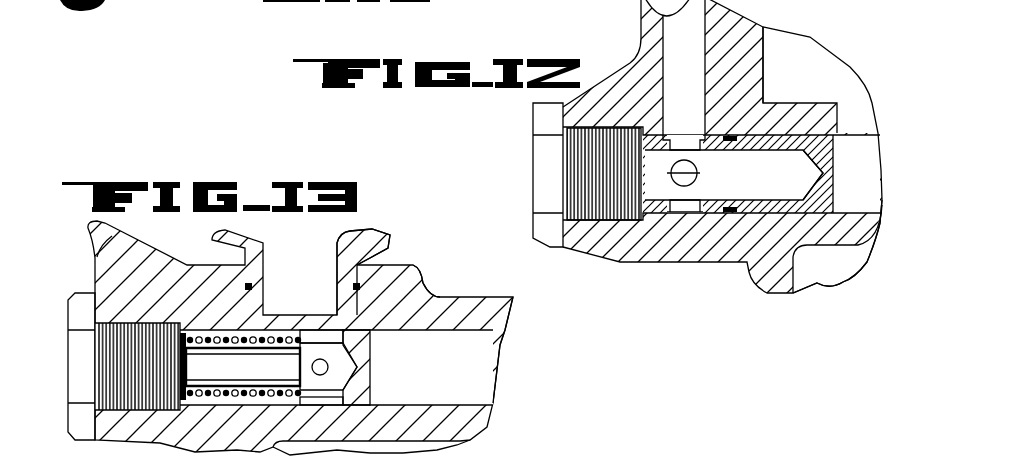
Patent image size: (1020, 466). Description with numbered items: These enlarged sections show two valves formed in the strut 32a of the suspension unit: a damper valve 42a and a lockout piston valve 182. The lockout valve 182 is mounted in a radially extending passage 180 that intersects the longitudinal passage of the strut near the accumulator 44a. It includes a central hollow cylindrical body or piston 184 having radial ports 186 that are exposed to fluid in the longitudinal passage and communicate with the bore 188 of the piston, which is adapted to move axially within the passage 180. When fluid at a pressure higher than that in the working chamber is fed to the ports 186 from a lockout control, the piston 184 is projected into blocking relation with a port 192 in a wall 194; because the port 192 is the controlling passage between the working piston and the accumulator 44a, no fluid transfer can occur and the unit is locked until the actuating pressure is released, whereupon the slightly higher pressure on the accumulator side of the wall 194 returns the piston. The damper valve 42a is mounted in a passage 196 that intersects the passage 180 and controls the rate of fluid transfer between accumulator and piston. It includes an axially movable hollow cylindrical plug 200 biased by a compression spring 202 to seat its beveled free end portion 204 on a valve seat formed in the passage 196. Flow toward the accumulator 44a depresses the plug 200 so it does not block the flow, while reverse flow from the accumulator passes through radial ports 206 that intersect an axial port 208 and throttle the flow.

In FIG. 12, the strut 32a is at (643, 22).
In FIG. 13, the strut 32a is at (118, 270).
In FIG. 12, the radially extending passage 180 is at (872, 210).
In FIG. 12, the lockout piston valve 182 is at (683, 214).
In FIG. 12, the piston 184 is at (827, 164).
In FIG. 12, the radial ports 186 is at (695, 152).
In FIG. 12, the bore 188 is at (803, 190).
In FIG. 12, the port 192 is at (853, 117).
In FIG. 12, the wall 194 is at (792, 110).
In FIG. 13, the passage 196 is at (503, 340).
In FIG. 13, the hollow cylindrical plug 200 is at (360, 343).
In FIG. 13, the compression spring 202 is at (278, 332).
In FIG. 13, the beveled free end portion 204 is at (357, 405).
In FIG. 13, the radial ports 206 is at (297, 360).
In FIG. 13, the axial port 208 is at (365, 365).
In FIG. 13, the damper valve 42a is at (366, 329).
In FIG. 13, the accumulator 44a is at (383, 240).